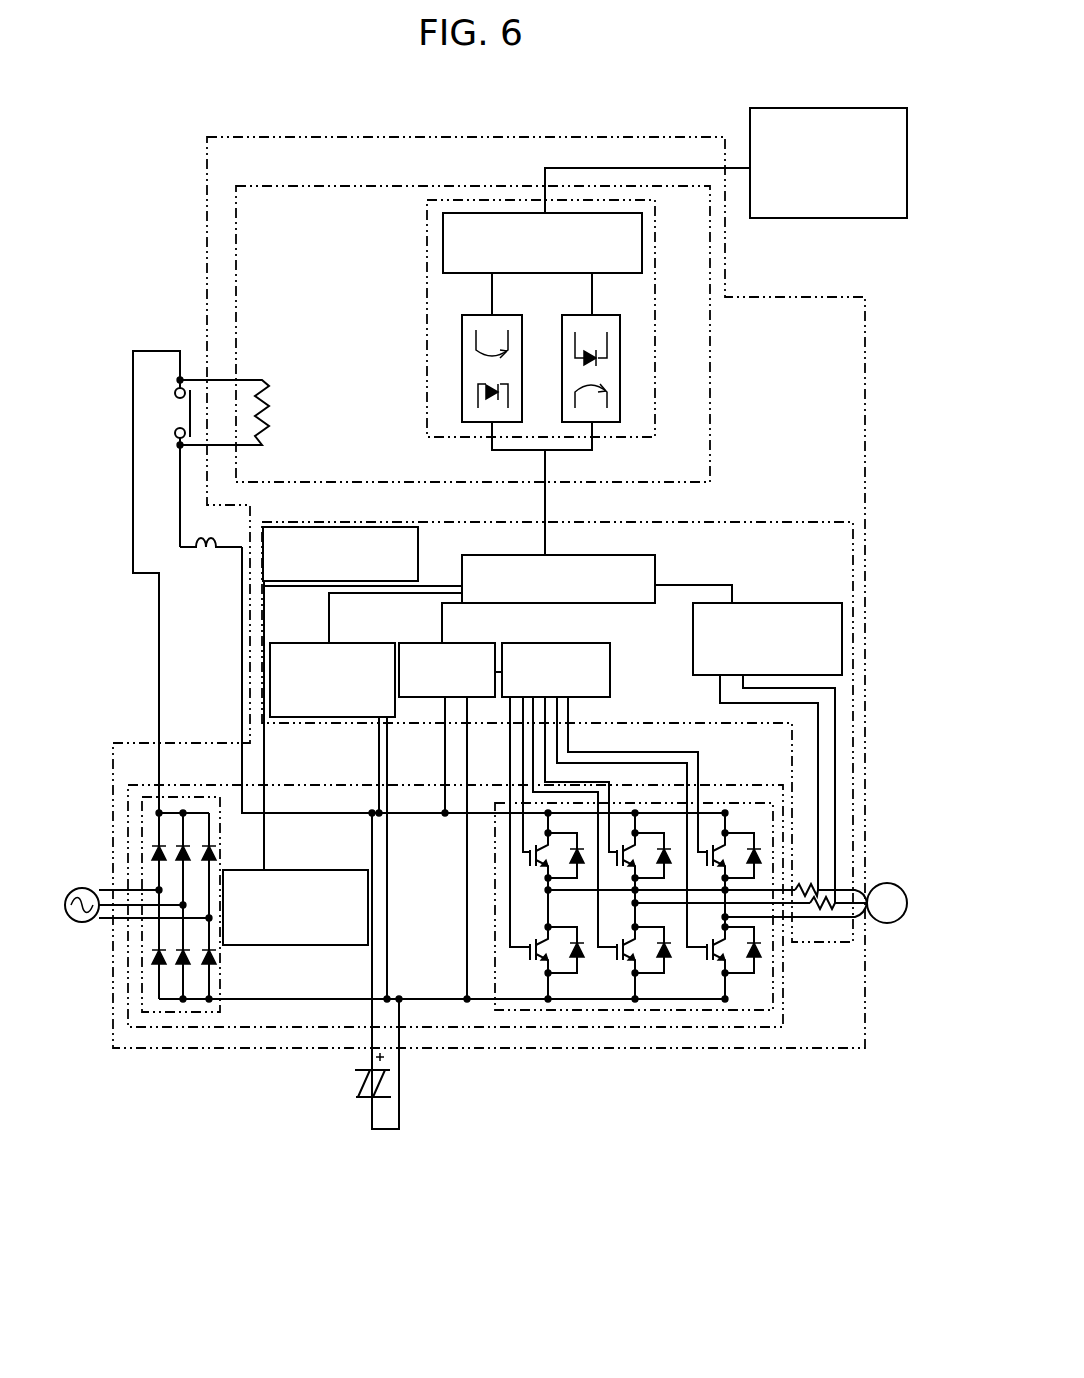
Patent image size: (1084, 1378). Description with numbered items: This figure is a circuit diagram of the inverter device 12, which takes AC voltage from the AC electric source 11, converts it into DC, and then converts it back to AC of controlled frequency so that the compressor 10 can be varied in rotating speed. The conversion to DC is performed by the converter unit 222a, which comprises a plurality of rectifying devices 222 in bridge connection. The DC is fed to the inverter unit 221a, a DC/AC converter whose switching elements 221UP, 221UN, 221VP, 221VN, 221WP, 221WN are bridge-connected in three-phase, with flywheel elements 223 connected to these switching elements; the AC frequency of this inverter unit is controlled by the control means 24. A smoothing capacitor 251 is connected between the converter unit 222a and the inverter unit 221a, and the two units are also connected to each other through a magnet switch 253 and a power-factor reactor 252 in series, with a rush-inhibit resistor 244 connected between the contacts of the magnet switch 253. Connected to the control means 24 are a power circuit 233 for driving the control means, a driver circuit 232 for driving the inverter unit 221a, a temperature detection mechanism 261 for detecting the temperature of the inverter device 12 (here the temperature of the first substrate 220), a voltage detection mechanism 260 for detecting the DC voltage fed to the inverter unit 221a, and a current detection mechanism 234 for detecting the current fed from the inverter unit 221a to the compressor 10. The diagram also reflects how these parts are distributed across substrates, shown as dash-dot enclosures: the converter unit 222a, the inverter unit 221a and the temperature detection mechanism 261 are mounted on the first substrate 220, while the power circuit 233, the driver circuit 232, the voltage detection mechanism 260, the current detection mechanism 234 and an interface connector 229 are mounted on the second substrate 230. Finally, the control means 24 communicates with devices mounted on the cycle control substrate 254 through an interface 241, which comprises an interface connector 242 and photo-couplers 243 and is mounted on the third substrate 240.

The inverter device 12 is at (207, 168).
The cycle control substrate 254 is at (825, 218).
The third substrate 240 is at (710, 410).
The interface 241 is at (655, 437).
The interface connector 242 is at (642, 252).
The photo-couplers 243 is at (620, 366).
The rush-inhibit resistor 244 is at (267, 385).
The magnet switch 253 is at (175, 433).
The power-factor reactor 252 is at (197, 548).
The second substrate 230 is at (753, 522).
The interface connector 229 is at (262, 527).
The control means 24 is at (655, 565).
The current detection mechanism 234 is at (783, 600).
The voltage detection mechanism 260 is at (270, 655).
The power circuit 233 is at (430, 697).
The driver circuit 232 is at (600, 645).
The first substrate 220 is at (660, 1028).
The converter unit 222a is at (142, 978).
The rectifying devices 222 is at (163, 975).
The AC electric source 11 is at (85, 922).
The temperature detection mechanism 261 is at (312, 947).
The smoothing capacitor 251 is at (360, 1098).
The inverter unit 221a is at (768, 1017).
The switching element 221UP is at (530, 852).
The switching element 221UN is at (533, 970).
The flywheel elements 223 is at (587, 957).
The switching element 221VP is at (622, 845).
The switching element 221VN is at (612, 968).
The switching element 221WP is at (712, 840).
The switching element 221WN is at (698, 967).
The compressor 10 is at (887, 923).